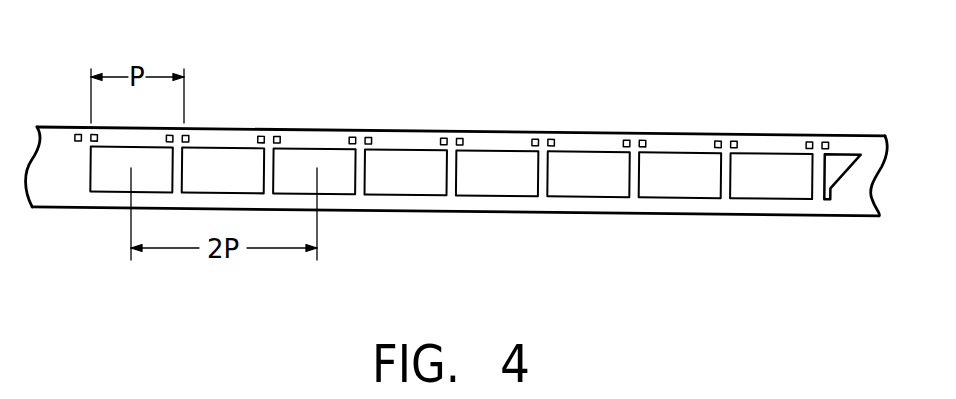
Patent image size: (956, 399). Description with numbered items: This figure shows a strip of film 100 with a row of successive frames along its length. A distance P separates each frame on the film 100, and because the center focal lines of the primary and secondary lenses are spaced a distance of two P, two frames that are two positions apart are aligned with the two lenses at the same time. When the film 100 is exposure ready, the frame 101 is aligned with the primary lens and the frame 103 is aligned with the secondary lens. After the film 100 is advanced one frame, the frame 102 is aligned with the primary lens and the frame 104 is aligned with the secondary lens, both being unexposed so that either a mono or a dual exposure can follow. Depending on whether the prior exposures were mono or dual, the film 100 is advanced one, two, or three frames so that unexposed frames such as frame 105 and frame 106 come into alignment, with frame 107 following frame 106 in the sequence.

The film 100 is at (368, 67).
The frame on film 101 is at (113, 182).
The film frame following frame 101 102 is at (207, 153).
The film frame following frame 102 103 is at (335, 183).
The film frame following frame 103 104 is at (390, 155).
The film frame following frame 104 105 is at (490, 187).
The film frame following frame 105 106 is at (572, 158).
The film frame following frame 106 107 is at (672, 188).